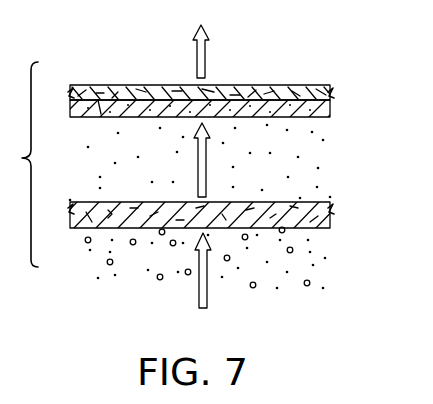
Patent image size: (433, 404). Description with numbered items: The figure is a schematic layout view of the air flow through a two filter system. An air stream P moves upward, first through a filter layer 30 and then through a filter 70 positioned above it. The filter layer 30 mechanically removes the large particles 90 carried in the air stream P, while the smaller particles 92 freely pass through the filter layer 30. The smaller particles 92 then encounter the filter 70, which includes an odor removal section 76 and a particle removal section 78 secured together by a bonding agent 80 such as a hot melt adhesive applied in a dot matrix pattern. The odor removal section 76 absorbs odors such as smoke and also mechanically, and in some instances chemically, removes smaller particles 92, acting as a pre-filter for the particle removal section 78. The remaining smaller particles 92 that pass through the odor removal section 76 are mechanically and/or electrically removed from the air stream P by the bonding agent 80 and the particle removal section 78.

The filter layer 30 is at (319, 229).
The filter 70 is at (219, 96).
The odor removal section 76 is at (330, 112).
The particle removal section 78 is at (331, 97).
The bonding agent 80 is at (100, 112).
The large particles 90 is at (187, 275).
The smaller particles 92 is at (112, 163).
The air stream P is at (205, 58).